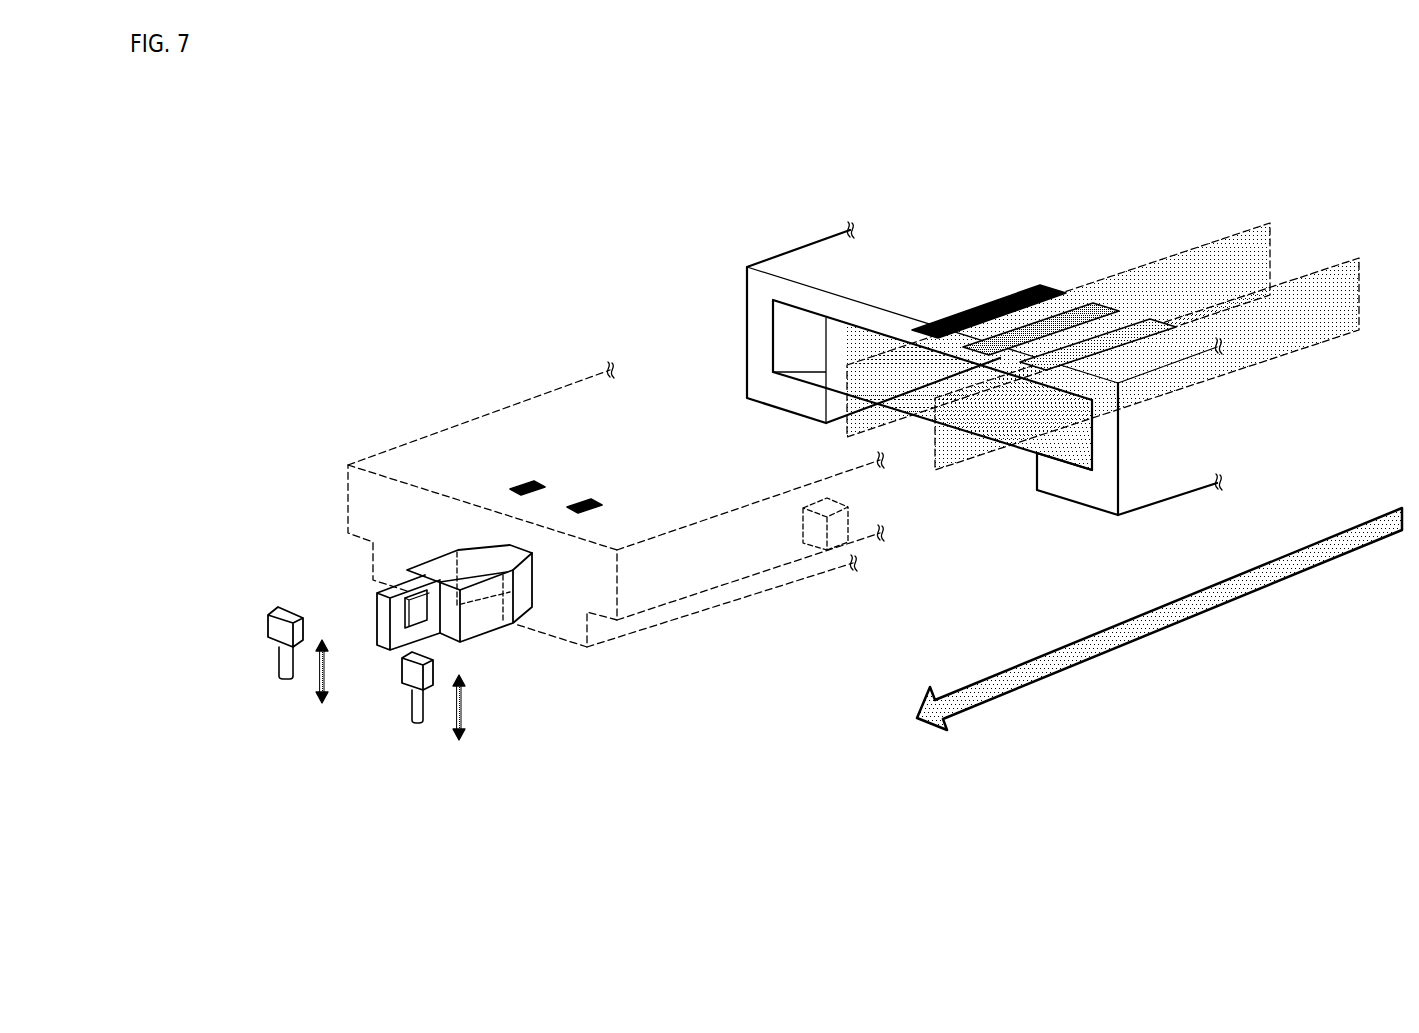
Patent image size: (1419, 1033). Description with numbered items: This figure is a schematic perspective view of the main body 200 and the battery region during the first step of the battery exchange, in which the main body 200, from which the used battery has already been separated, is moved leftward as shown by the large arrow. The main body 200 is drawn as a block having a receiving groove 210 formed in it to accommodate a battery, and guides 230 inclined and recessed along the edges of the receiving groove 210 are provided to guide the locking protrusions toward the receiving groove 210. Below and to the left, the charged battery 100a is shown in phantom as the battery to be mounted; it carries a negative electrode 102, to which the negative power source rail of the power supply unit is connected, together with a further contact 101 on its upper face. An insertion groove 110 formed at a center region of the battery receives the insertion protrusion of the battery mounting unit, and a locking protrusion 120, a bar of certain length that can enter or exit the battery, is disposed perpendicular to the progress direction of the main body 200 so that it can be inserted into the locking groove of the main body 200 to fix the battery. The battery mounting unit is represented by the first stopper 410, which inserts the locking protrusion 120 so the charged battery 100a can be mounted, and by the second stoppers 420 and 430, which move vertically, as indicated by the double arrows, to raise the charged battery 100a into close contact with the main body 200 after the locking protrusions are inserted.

The charged battery 100a is at (331, 460).
The first chip 101 is at (522, 483).
The negative electrode 102 is at (600, 502).
The insertion groove 110 is at (440, 568).
The locking protrusion 120 is at (817, 533).
The main body 200 is at (788, 222).
The receiving groove 210 is at (1073, 448).
The guide 230 is at (793, 336).
The first stopper 410 is at (483, 613).
The second stopper 420 is at (268, 623).
The second stopper 430 is at (412, 673).